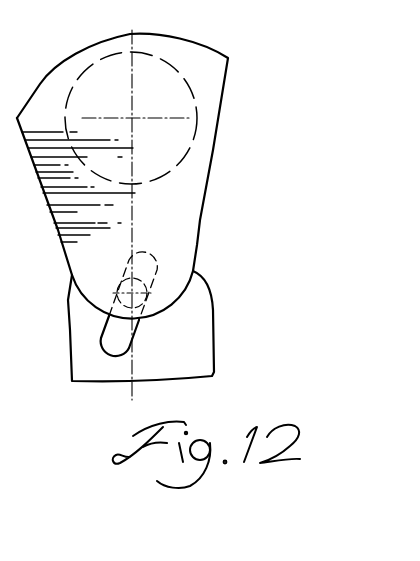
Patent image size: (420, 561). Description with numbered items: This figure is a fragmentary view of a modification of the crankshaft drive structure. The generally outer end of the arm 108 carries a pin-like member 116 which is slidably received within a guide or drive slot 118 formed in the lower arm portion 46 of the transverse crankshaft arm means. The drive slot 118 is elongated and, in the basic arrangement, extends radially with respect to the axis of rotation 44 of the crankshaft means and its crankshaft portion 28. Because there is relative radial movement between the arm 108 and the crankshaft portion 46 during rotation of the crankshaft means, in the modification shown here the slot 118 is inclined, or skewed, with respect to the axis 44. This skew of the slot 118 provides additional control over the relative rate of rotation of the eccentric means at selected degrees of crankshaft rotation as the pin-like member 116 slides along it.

The crankshaft portion 28 is at (250, 105).
The axis of rotation 44 is at (216, 154).
The arm 108 is at (250, 226).
The pin-like member 116 is at (120, 292).
The drive slot 118 is at (100, 340).
The lower arm portion 46 is at (257, 342).